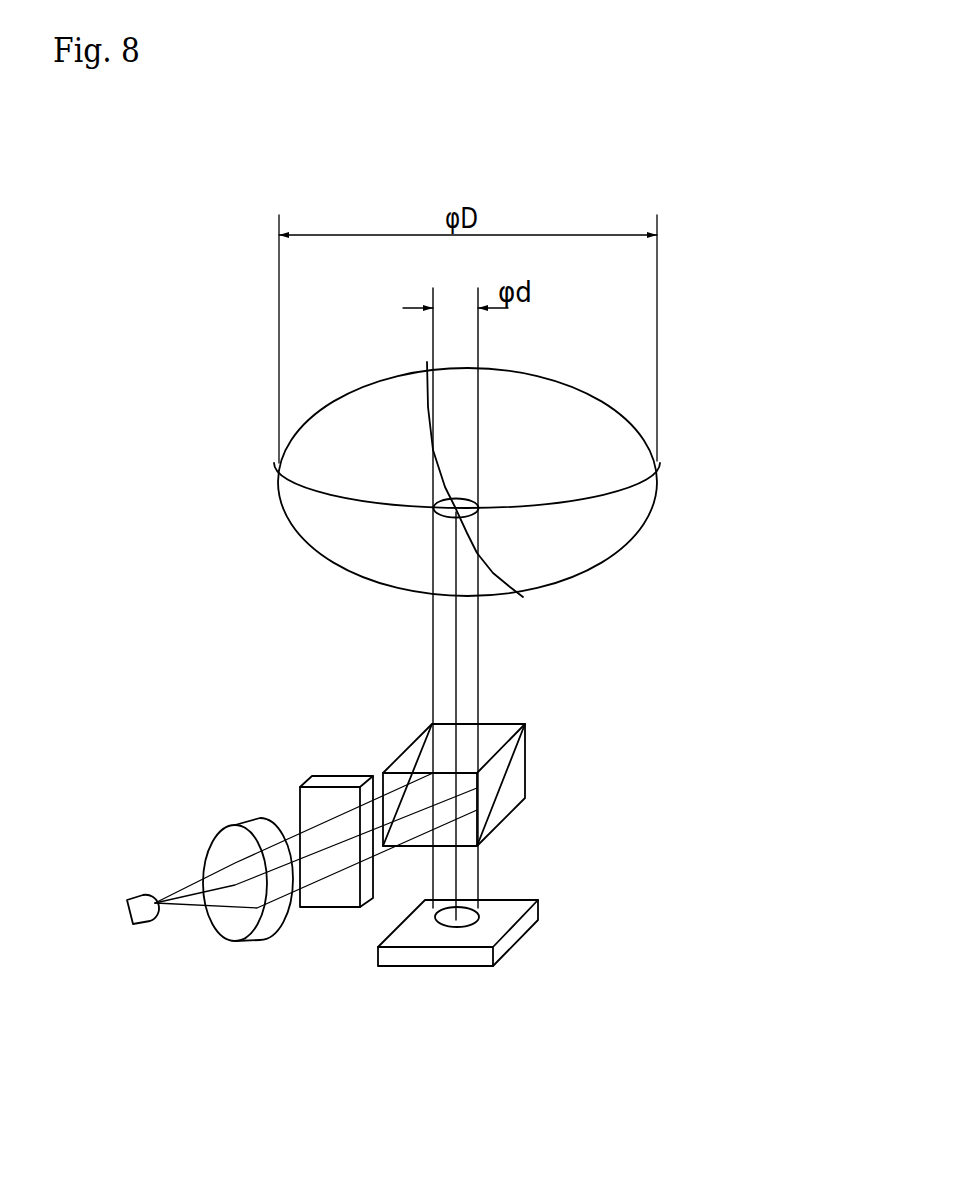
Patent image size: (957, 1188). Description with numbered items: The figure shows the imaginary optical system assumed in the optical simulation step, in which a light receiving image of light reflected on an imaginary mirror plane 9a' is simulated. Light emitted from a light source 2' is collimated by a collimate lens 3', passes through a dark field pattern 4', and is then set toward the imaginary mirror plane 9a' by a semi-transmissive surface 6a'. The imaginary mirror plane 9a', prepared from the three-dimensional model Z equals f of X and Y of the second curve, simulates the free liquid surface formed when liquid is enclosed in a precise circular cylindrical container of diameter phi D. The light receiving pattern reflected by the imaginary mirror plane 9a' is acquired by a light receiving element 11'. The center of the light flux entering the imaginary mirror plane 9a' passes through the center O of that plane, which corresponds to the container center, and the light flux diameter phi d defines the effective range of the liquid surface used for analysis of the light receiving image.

The light source 2' is at (143, 957).
The collimate lens 3' is at (248, 931).
The dark field pattern 4' is at (336, 904).
The semi-transmissive surface 6a' is at (490, 788).
The imaginary mirror plane 9a' is at (553, 495).
The light receiving element 11' is at (458, 964).
The center of the imaginary mirror plane O is at (455, 513).